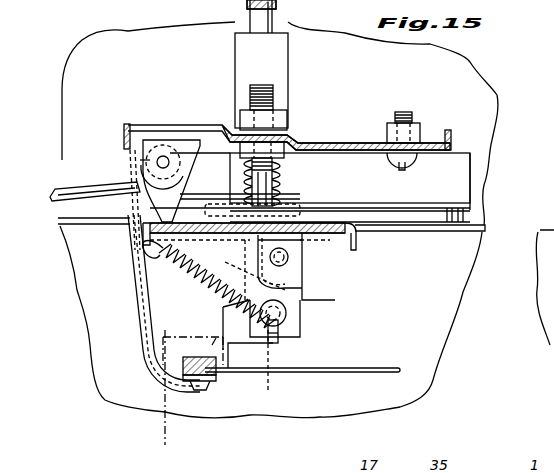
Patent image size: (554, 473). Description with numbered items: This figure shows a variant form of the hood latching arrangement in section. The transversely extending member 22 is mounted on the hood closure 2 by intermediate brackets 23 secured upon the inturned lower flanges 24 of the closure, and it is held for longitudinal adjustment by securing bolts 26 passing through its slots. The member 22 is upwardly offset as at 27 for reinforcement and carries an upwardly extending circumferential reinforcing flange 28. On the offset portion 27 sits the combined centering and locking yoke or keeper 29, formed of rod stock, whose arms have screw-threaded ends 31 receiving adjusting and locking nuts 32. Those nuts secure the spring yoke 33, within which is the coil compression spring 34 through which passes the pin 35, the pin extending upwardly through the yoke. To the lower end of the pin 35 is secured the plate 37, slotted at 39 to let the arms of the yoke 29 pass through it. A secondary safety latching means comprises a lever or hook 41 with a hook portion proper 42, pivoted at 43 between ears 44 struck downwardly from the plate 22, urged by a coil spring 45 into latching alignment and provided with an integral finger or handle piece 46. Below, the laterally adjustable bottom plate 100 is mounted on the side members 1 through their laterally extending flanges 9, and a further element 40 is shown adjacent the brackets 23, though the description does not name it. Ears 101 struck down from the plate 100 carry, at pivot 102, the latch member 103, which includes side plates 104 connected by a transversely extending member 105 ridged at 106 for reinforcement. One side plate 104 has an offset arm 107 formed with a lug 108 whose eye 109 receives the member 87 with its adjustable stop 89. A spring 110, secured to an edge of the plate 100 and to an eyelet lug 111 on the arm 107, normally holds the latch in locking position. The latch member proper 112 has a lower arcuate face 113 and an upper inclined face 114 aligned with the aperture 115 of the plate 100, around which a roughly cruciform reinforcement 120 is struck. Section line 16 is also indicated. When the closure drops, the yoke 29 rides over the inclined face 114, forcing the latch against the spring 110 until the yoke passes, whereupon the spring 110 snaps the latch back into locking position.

The side member 1 is at (537, 293).
The hood closure 2 is at (472, 77).
The laterally extending flange 9 is at (405, 226).
The section line 16- 16 is at (163, 443).
The transversely extending member 22 is at (338, 142).
The intermediate bracket 23 is at (462, 176).
The inturned lower flange 24 is at (476, 200).
The securing bolt 26 is at (404, 112).
The upward offset 27 is at (298, 138).
The circumferential reinforcing flange 28 is at (505, 126).
The centering and locking yoke 29 is at (241, 247).
The screw-threaded end 31 is at (263, 92).
The adjusting and locking nut 32 is at (308, 156).
The spring yoke 33 is at (262, 52).
The coil compression spring 34 is at (280, 176).
The pin 35 is at (276, 12).
The plate 37 is at (312, 210).
The slot 39 is at (280, 207).
The spacer 40 is at (470, 216).
The lever or hook 41 is at (140, 302).
The hook portion 42 is at (205, 340).
The pivot 43 is at (163, 150).
The ear 44 is at (182, 146).
The coil spring 45 is at (150, 160).
The finger or handle piece 46 is at (90, 186).
The member 87 is at (360, 374).
The adjustable stop 89 is at (193, 351).
The bottom plate 100 is at (357, 237).
The ear 101 is at (290, 247).
The pivot 102 is at (288, 257).
The latch member 103 is at (306, 270).
The side plate 104 is at (255, 320).
The transversely extending member 105 is at (286, 316).
The ridge or offset 106 is at (300, 300).
The offset lug or arm 107 is at (238, 354).
The lug 108 is at (212, 378).
The eye or aperture 109 is at (222, 380).
The spring 110 is at (205, 292).
The eyelet lug 111 is at (276, 340).
The latch member proper 112 is at (281, 330).
The lower arcuate face 113 is at (275, 368).
The inclined upper face 114 is at (240, 268).
The aperture 115 is at (233, 206).
The cruciform reinforcement 120 is at (336, 223).